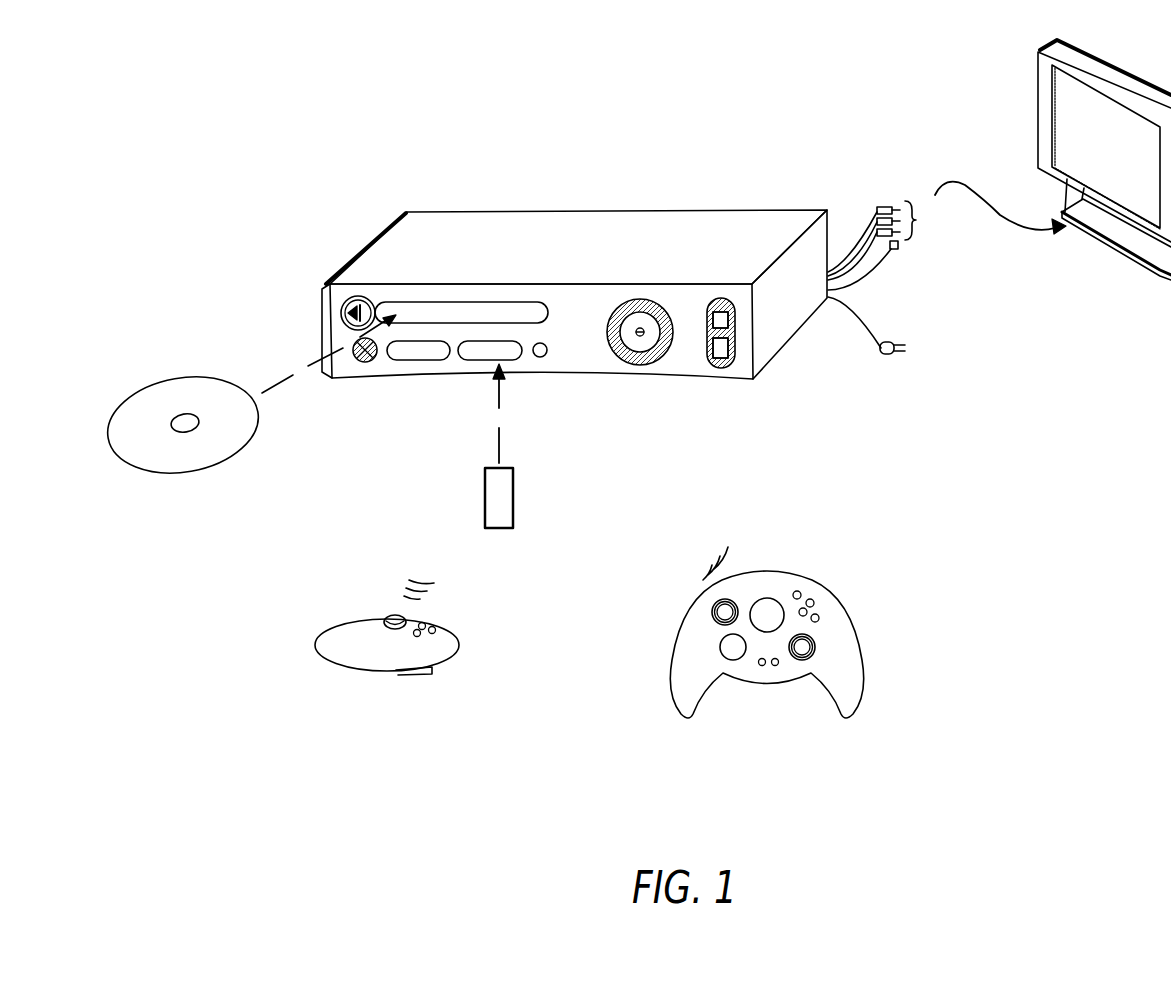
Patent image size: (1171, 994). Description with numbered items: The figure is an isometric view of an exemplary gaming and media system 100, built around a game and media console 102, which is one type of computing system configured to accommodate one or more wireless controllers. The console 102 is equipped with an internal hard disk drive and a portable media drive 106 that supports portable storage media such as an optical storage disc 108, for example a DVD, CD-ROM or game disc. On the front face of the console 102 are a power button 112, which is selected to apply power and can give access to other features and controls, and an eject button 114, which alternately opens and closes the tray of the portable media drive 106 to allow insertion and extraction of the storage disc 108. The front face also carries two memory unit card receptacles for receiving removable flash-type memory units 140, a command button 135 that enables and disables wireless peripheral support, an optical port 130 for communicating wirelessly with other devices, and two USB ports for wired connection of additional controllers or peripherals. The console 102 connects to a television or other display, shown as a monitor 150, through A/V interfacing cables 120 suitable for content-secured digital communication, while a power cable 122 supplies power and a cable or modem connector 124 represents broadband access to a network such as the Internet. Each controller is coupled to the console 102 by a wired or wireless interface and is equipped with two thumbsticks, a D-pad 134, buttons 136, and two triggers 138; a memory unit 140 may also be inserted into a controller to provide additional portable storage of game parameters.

The gaming and media system 100 is at (606, 168).
The game and media console 102 is at (448, 220).
The portable media drive 106 is at (472, 300).
The optical storage disc 108 is at (195, 470).
The power button 112 is at (639, 352).
The eject button 114 is at (344, 309).
The A/V interfacing cables 120 is at (887, 206).
The power cable 122 is at (885, 355).
The cable or modem connector 124 is at (895, 250).
The optical port 130 is at (364, 363).
The D-pad 134 is at (721, 647).
The command button 135 is at (540, 358).
The buttons 136 is at (813, 603).
The triggers 138 is at (427, 687).
The memory unit 140 is at (500, 529).
The monitor 150 is at (1038, 112).